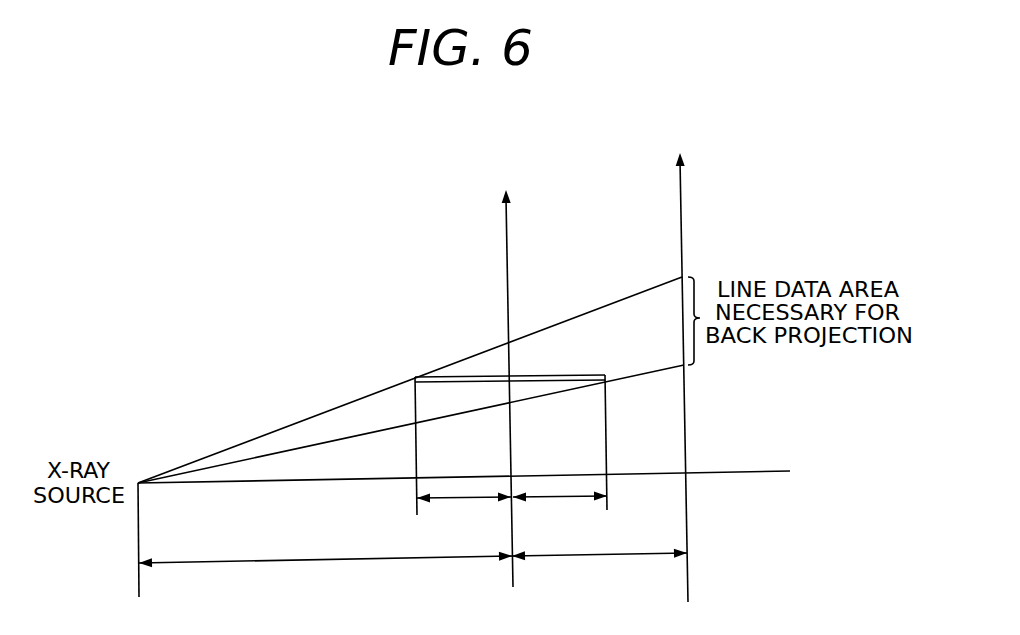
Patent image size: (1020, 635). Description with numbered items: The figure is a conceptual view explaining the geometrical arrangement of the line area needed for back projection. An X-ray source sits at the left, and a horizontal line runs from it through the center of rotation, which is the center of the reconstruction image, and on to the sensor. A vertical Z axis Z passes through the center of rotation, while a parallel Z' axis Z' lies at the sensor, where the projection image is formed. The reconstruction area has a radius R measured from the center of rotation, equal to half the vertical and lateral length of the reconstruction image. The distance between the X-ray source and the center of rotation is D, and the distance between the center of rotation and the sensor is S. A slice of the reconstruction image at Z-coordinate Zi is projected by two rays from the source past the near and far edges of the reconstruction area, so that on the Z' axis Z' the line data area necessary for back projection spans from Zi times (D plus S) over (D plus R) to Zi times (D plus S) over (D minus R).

The Z-coordinate Z is at (505, 374).
The Z'-coordinate Z' is at (676, 363).
The slice position Zi is at (520, 383).
The distance between the X-ray source and the center of rotation D is at (325, 574).
The distance between the center of rotation and the sensor S is at (599, 568).
The radius of a reconstruction area R is at (512, 511).